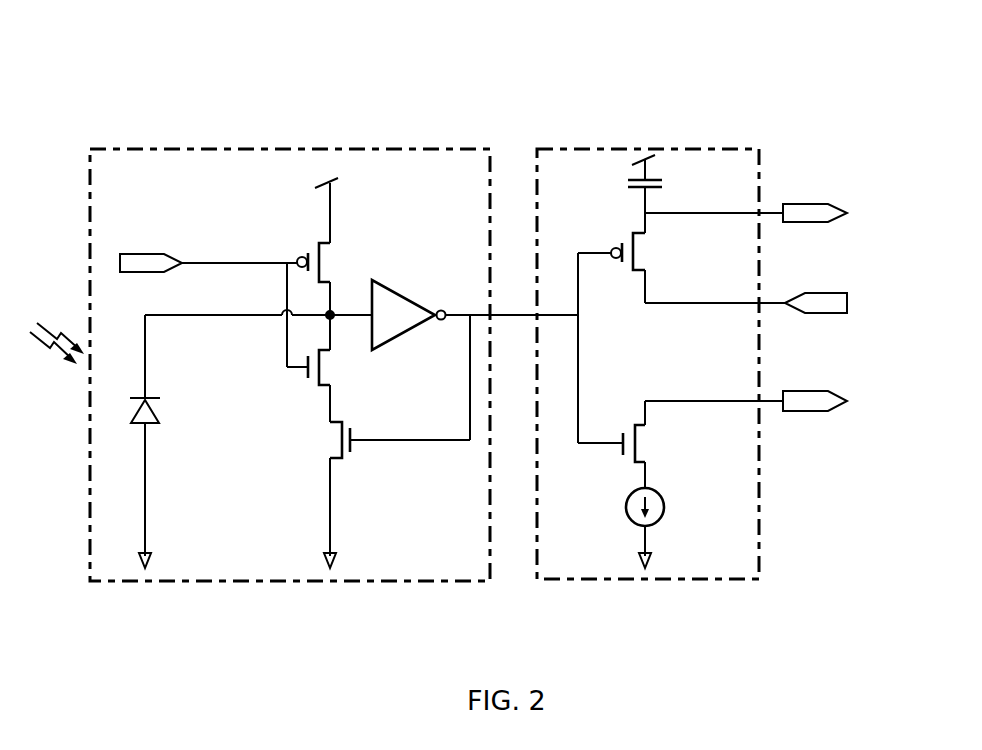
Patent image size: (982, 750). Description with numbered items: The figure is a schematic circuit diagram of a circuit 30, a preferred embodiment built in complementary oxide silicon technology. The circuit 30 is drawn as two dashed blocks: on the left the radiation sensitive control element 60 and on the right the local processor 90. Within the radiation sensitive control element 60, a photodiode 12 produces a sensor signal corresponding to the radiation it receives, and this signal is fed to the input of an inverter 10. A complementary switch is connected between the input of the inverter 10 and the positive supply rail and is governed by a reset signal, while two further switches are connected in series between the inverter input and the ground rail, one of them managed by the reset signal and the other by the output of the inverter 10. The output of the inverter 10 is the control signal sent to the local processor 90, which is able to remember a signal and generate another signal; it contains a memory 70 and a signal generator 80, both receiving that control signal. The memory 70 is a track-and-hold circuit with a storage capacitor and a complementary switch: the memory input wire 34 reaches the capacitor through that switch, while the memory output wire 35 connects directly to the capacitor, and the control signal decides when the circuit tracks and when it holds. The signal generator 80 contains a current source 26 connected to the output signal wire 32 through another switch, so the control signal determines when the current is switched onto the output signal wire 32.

The circuit 30 is at (477, 96).
The radiation sensitive control element 60 is at (245, 582).
The local processor 90 is at (612, 580).
The inverter 10 is at (383, 280).
The photodiode 12 is at (158, 412).
The memory 70 is at (608, 221).
The signal generator 80 is at (686, 478).
The current source 26 is at (632, 525).
The output signal wire 32 is at (720, 401).
The memory input wire 34 is at (660, 303).
The memory output wire 35 is at (694, 213).